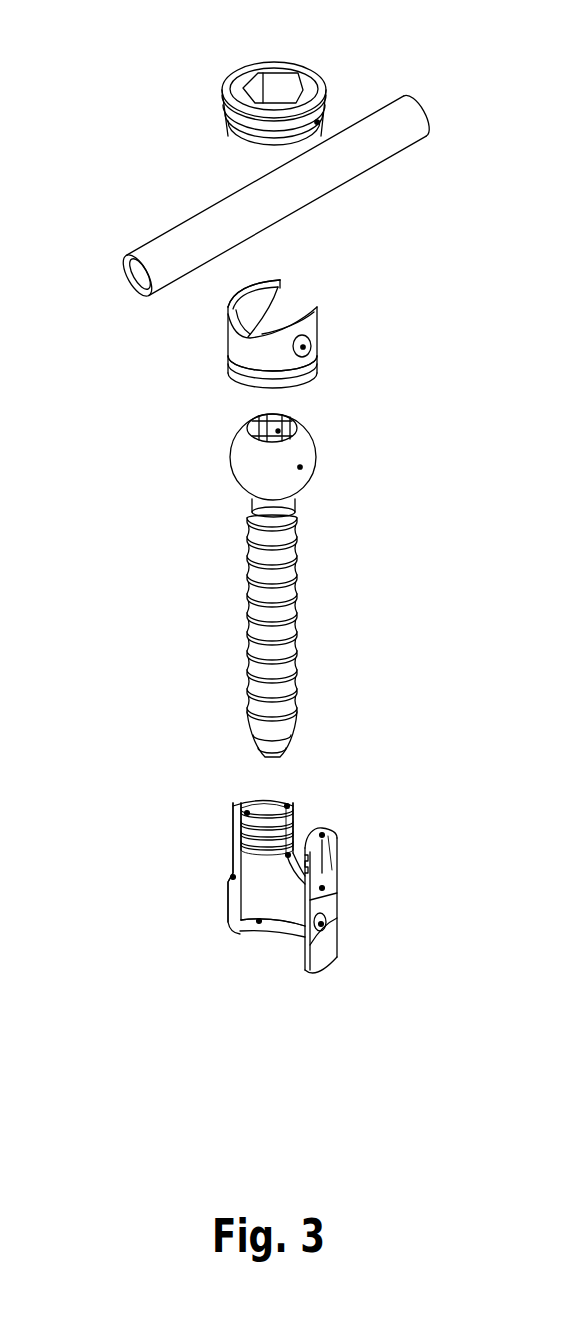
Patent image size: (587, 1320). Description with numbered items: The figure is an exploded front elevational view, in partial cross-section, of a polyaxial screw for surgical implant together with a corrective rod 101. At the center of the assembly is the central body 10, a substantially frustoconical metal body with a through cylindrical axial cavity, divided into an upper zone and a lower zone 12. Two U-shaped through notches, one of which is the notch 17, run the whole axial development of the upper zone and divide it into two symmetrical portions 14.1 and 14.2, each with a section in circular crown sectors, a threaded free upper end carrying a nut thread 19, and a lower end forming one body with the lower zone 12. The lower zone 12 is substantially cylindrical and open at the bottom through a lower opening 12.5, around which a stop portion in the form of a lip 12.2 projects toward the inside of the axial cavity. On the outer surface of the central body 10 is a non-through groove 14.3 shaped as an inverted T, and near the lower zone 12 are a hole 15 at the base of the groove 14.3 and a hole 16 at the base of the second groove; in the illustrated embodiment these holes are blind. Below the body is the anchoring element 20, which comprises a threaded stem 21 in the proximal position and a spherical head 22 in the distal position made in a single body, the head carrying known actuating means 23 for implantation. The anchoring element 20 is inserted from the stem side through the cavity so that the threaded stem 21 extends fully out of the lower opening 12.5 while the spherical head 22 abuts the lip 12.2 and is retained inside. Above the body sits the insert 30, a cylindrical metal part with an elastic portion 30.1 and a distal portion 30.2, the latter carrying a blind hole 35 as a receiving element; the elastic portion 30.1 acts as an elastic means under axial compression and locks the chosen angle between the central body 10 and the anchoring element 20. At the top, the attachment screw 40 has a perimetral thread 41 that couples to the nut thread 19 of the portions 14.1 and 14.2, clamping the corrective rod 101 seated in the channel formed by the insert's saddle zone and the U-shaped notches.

The central body 10 is at (308, 891).
The lower zone 12 is at (308, 891).
The lip 12.2 is at (259, 921).
The lower opening 12.5 is at (288, 943).
The first portion of the upper zone 14.1 is at (322, 835).
The second portion of the upper zone 14.2 is at (287, 806).
The groove 14.3 is at (322, 888).
The hole 15 is at (321, 924).
The hole 16 is at (233, 877).
The U-shaped through notch 17 is at (288, 855).
The nut thread 19 is at (247, 813).
The anchoring element 20 is at (355, 569).
The threaded stem 21 is at (287, 666).
The spherical head 22 is at (300, 467).
The actuating means 23 is at (293, 425).
The insert 30 is at (386, 267).
The elastic portion 30.1 is at (222, 372).
The distal portion 30.2 is at (210, 333).
The blind hole 35 is at (303, 347).
The attachment screw 40 is at (215, 88).
The perimetral thread 41 is at (317, 122).
The corrective rod 101 is at (182, 218).